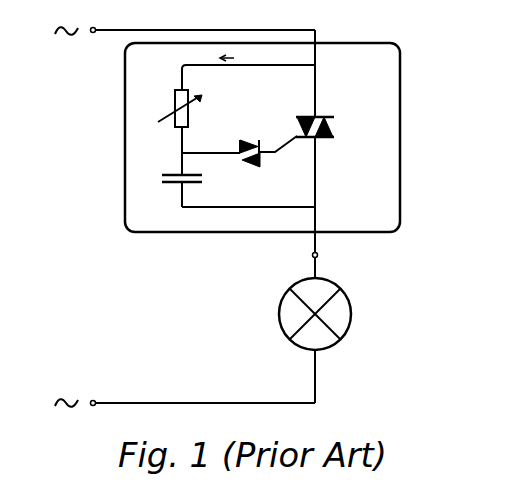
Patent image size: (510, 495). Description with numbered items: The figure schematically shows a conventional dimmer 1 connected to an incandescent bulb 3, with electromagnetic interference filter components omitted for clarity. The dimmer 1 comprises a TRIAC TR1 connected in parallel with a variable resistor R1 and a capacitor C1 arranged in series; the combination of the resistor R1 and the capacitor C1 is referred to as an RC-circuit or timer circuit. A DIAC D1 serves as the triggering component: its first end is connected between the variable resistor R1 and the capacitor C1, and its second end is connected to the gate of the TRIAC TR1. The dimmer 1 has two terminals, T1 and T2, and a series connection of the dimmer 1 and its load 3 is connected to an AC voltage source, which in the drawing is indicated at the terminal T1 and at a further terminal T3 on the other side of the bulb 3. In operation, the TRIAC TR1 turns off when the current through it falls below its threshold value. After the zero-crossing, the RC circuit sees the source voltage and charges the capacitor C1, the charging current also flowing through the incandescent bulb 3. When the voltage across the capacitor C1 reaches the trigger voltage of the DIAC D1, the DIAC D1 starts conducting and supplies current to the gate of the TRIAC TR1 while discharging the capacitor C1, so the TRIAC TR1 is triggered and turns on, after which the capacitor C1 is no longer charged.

The dimmer 1 is at (403, 73).
The incandescent bulb 3 is at (360, 316).
The terminal T1 is at (95, 20).
The terminal T2 is at (326, 256).
The third terminal T3 is at (95, 393).
The variable resistor R1 is at (168, 108).
The capacitor C1 is at (168, 167).
The DIAC D1 is at (245, 139).
The TRIAC TR1 is at (333, 115).